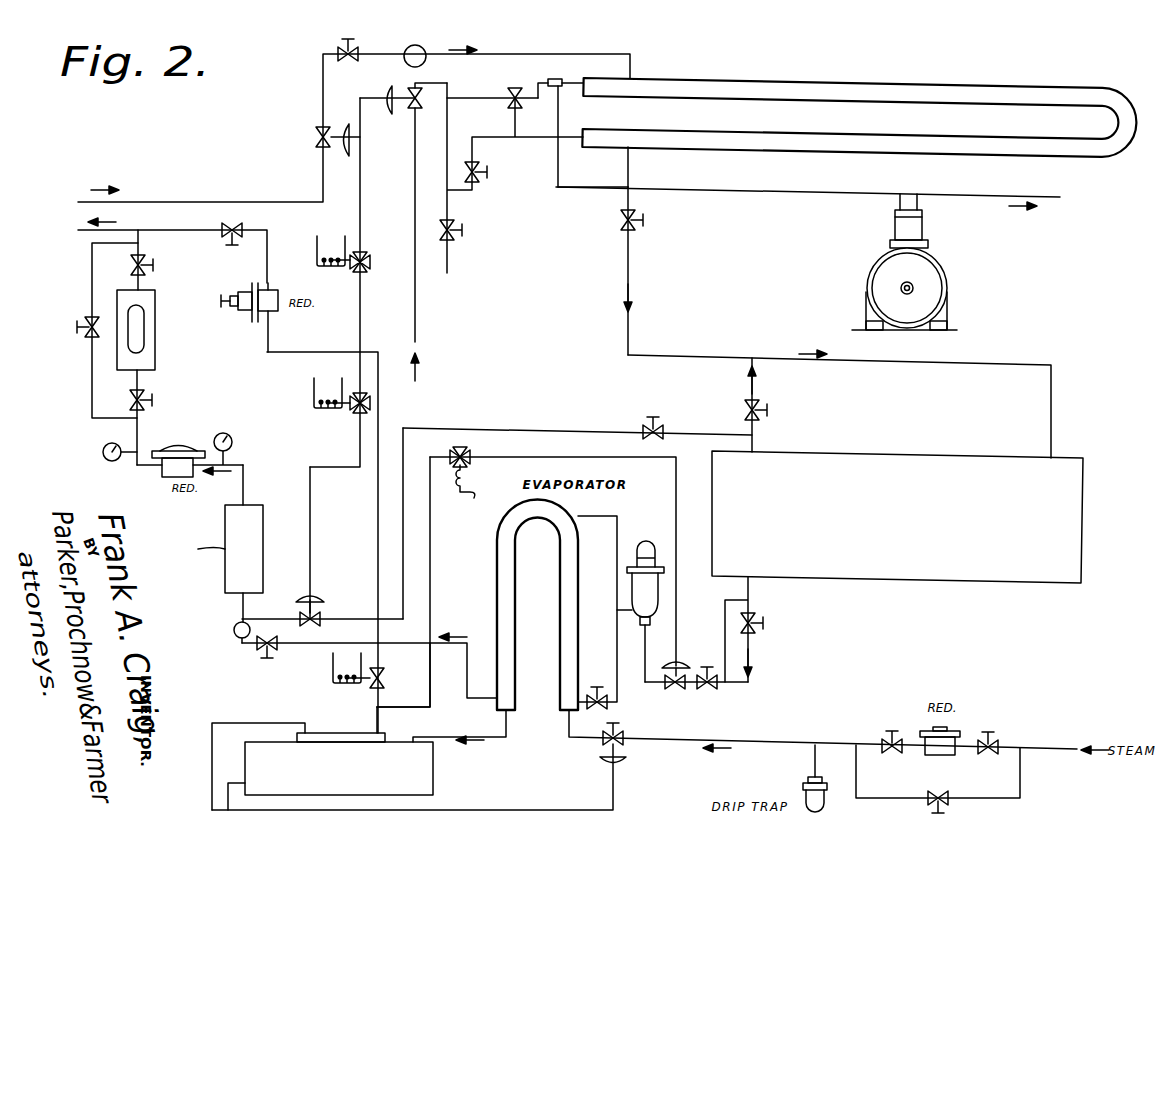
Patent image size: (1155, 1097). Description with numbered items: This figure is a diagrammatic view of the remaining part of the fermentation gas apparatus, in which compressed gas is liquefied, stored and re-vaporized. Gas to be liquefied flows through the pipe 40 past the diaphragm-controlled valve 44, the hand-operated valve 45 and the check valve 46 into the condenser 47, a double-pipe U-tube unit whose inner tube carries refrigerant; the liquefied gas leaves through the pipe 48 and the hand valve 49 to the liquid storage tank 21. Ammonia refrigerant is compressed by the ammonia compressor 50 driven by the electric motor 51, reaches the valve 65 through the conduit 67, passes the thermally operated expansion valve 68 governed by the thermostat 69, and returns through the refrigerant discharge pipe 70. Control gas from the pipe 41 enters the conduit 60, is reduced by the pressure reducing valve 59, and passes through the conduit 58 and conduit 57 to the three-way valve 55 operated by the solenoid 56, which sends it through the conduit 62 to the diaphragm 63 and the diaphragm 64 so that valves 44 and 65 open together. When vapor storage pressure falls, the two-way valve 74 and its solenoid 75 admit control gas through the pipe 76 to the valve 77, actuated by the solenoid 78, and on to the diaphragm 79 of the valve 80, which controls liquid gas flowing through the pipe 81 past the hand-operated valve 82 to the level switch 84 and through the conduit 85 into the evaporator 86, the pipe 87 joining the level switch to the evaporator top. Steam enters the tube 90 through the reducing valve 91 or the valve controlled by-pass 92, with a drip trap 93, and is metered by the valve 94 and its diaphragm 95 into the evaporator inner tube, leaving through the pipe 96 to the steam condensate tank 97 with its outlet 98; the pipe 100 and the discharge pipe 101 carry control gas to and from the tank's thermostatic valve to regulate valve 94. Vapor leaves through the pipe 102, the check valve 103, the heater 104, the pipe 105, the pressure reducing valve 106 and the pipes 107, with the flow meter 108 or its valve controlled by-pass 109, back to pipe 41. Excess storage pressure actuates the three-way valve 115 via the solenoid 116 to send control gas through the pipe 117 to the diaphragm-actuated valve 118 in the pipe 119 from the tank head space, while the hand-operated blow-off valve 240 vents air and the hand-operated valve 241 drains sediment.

The liquid storage tank 21 is at (1084, 530).
The pipe 40 is at (76, 197).
The pipe 41 is at (78, 232).
The diaphragm-controlled valve 44 is at (314, 139).
The hand-operated valve 45 is at (336, 51).
The check valve 46 is at (412, 48).
The condenser 47 is at (866, 84).
The pipe 48 is at (632, 168).
The hand valve 49 is at (622, 230).
The ammonia compressor 50 is at (926, 228).
The electric motor 51 is at (950, 292).
The three-way valve 55 is at (370, 266).
The solenoid 56 is at (332, 242).
The conduit 57 is at (364, 318).
The conduit 58 is at (349, 352).
The pressure reducing valve 59 is at (252, 324).
The conduit 60 is at (246, 272).
The conduit 62 is at (362, 218).
The diaphragm 63 is at (347, 154).
The diaphragm 64 is at (392, 114).
The valve 65 is at (423, 114).
The conduit 67 is at (418, 320).
The expansion valve 68 is at (506, 98).
The thermostat 69 is at (548, 80).
The refrigerant discharge pipe 70 is at (574, 98).
The two-way valve 74 is at (386, 678).
The solenoid 75 is at (342, 686).
The pipe 76 is at (432, 548).
The valve 77 is at (470, 453).
The solenoid 78 is at (474, 499).
The diaphragm 79 is at (682, 662).
The valve 80 is at (678, 692).
The pipe 81 is at (748, 690).
The hand-operated valve 82 is at (708, 692).
The level switch 84 is at (632, 591).
The conduit 85 is at (617, 658).
The evaporator 86 is at (570, 614).
The pipe 87 is at (620, 522).
The tube 90 is at (578, 740).
The reducing valve 91 is at (942, 756).
The valve controlled by-pass 92 is at (968, 802).
The drip trap 93 is at (828, 806).
The valve 94 is at (618, 738).
The diaphragm 95 is at (628, 762).
The pipe 96 is at (500, 740).
The steam condensate tank 97 is at (435, 790).
The outlet 98 is at (230, 782).
The pipe 100 is at (375, 718).
The discharge pipe 101 is at (222, 723).
The pipe 102 is at (240, 648).
The check valve 103 is at (233, 629).
The heater 104 is at (226, 571).
The pipe 105 is at (248, 490).
The pressure reducing valve 106 is at (170, 478).
The pipes 107 is at (152, 241).
The flow meter 108 is at (157, 353).
The valve controlled by-pass 109 is at (90, 383).
The three-way valve 115 is at (355, 412).
The solenoid 116 is at (314, 408).
The pipe 117 is at (318, 474).
The diaphragm-actuated valve 118 is at (316, 625).
The pipe 119 is at (574, 424).
The hand-operated blow-off valve 240 is at (764, 418).
The hand-operated valve 241 is at (757, 630).